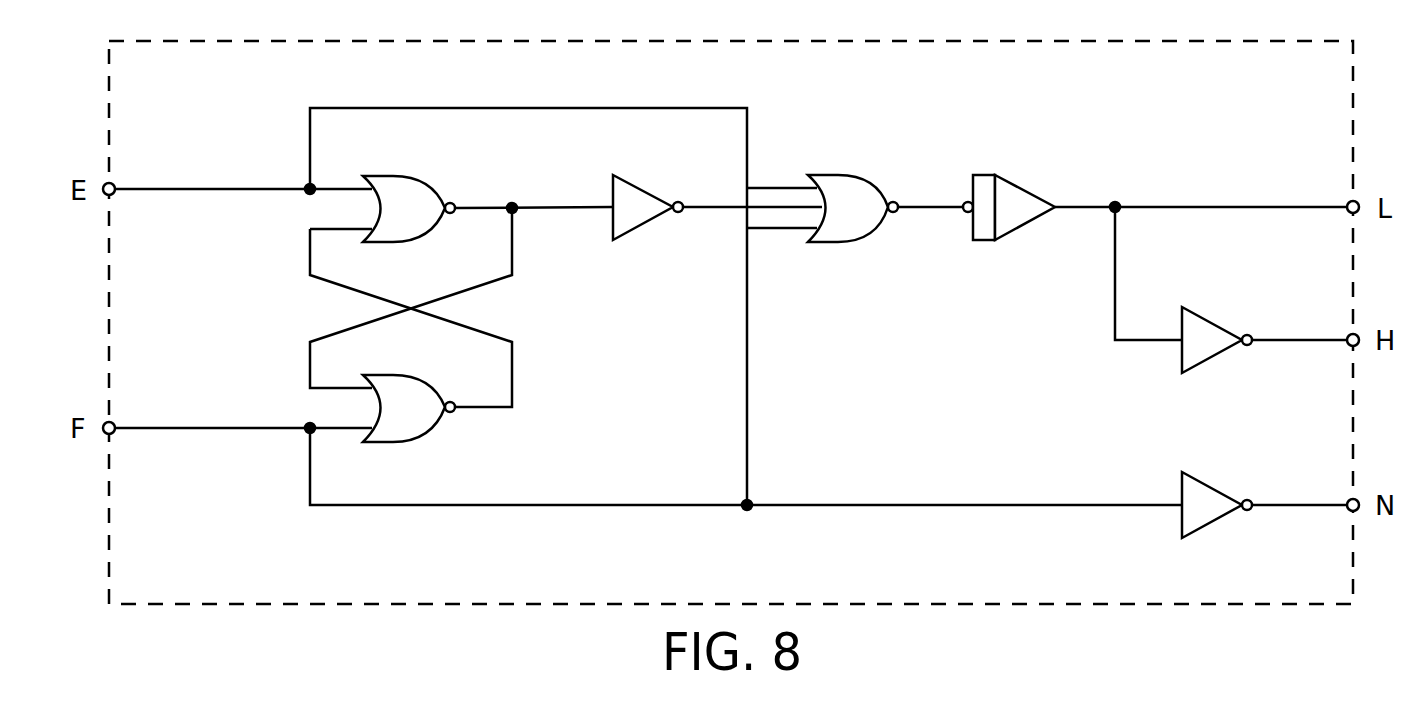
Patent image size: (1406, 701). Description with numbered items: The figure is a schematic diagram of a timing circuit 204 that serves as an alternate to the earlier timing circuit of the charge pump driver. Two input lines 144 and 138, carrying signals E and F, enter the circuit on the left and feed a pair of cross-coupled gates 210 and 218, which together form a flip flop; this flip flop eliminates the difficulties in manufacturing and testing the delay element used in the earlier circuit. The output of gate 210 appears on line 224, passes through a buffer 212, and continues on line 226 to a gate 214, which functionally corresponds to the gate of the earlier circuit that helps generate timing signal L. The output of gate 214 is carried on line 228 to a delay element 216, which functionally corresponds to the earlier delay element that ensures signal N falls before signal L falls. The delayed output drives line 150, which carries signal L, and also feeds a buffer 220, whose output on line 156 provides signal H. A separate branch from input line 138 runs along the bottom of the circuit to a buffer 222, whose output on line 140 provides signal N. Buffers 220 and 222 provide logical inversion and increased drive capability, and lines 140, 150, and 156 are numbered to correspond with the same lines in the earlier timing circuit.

The timing circuit 204 is at (429, 84).
The input signal line E 144 is at (222, 189).
The input signal line F 138 is at (222, 428).
The gate 210 is at (415, 180).
The gate 218 is at (415, 440).
The inverter 212 is at (648, 190).
The gate 214 is at (862, 178).
The delay element 216 is at (1037, 190).
The buffer 220 is at (1225, 320).
The buffer 222 is at (1225, 488).
The signal line 224 is at (577, 211).
The signal line 226 is at (723, 211).
The signal line 228 is at (930, 211).
The line 150 is at (1300, 211).
The line 156 is at (1300, 344).
The line 140 is at (1300, 509).